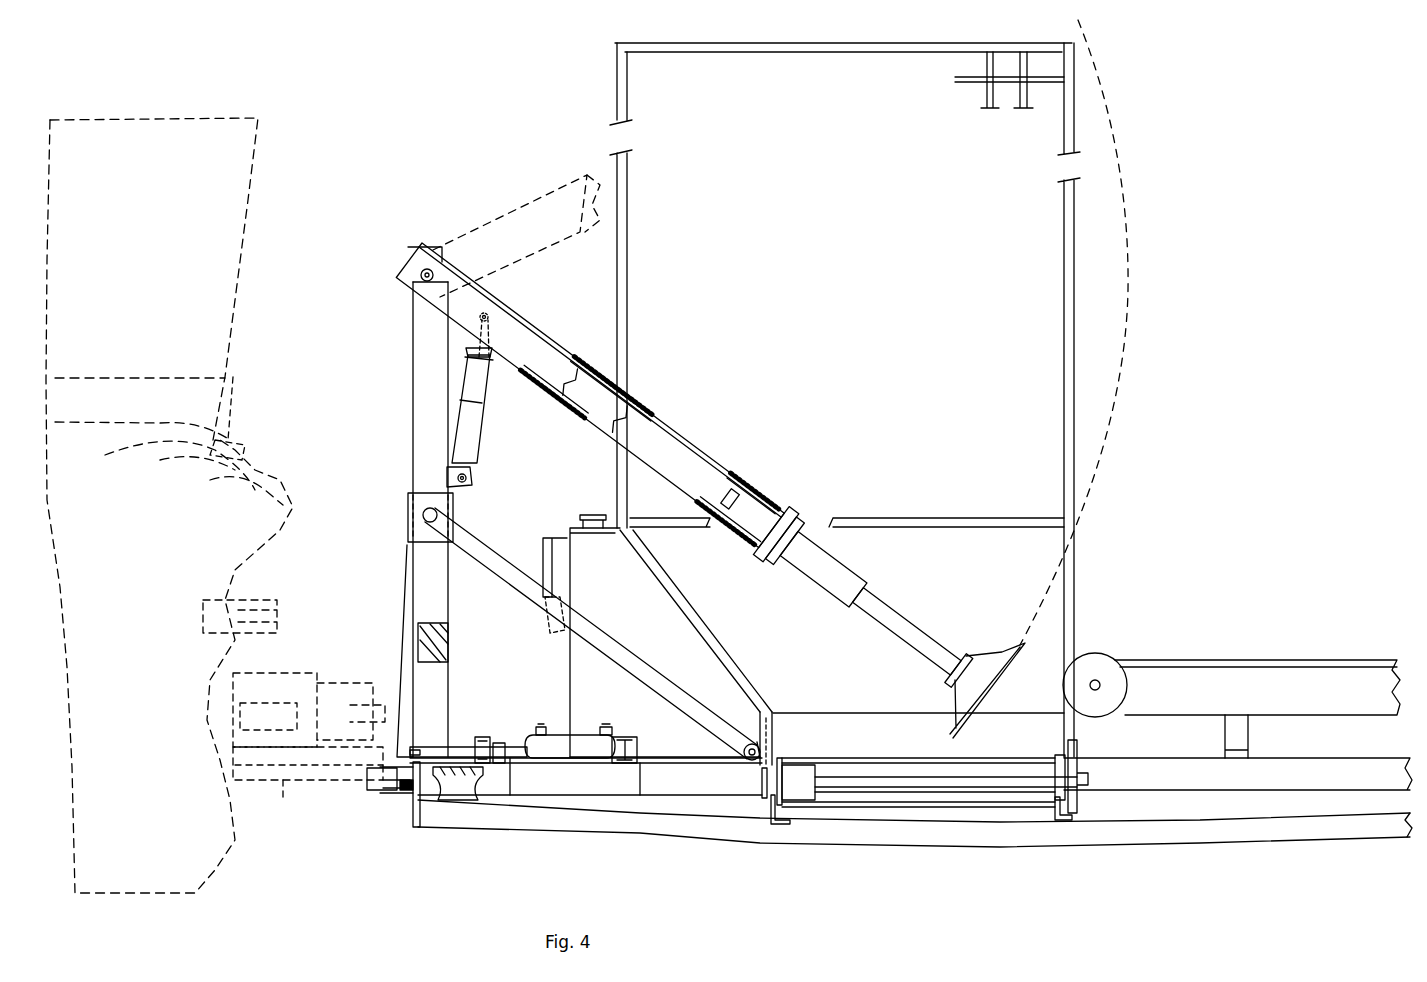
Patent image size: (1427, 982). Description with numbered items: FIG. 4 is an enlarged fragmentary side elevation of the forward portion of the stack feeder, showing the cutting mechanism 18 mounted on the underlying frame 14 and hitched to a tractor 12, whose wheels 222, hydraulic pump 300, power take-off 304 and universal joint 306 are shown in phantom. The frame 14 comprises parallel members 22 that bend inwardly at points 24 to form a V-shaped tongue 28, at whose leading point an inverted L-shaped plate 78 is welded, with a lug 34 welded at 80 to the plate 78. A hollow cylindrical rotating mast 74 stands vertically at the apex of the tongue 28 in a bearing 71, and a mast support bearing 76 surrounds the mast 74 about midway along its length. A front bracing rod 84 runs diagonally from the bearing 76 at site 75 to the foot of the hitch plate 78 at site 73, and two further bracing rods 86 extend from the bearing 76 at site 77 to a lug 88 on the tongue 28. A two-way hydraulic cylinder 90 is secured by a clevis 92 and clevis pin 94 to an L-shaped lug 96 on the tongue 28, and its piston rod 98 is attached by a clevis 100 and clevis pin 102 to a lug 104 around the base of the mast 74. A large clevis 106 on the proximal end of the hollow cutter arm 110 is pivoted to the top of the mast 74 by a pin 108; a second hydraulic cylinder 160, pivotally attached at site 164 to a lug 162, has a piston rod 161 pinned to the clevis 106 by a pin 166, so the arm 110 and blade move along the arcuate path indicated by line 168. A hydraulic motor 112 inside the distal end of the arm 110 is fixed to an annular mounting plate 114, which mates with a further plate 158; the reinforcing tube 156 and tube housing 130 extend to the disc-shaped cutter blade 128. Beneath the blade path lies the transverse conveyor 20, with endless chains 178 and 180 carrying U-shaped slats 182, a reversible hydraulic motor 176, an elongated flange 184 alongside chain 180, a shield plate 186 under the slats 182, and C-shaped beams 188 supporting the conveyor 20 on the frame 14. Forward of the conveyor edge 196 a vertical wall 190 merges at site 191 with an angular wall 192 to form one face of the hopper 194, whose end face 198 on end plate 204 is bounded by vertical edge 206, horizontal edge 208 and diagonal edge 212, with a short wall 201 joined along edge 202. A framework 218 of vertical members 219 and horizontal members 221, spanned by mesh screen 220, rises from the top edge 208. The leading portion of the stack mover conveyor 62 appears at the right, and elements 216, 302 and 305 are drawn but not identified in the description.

The tractor 12 is at (258, 218).
The underlying frame 14 is at (920, 833).
The cutting mechanism 18 is at (405, 185).
The transverse conveyor 20 is at (858, 812).
The parallel members 22 is at (965, 830).
The points 24 is at (868, 818).
The V-shaped tongue 28 is at (580, 818).
The lug 34 is at (380, 785).
The conveyor 62 is at (1130, 692).
The bearing 71 is at (440, 805).
The site 73 is at (425, 747).
The rotating mast 74 is at (413, 405).
The site 75 is at (408, 520).
The mast support bearing 76 is at (455, 502).
The site 77 is at (408, 497).
The inverted L-shaped plate 78 is at (410, 820).
The weld site 80 is at (410, 800).
The front bracing rod 84 is at (405, 598).
The bracing rods 86 is at (592, 640).
The lug 88 is at (747, 722).
The two-way hydraulic cylinder 90 is at (568, 738).
The clevis 92 is at (640, 748).
The clevis pin 94 is at (608, 725).
The L-shaped lug 96 is at (643, 770).
The piston rod 98 is at (512, 760).
The clevis 100 is at (497, 745).
The clevis pin 102 is at (483, 737).
The lug 104 is at (455, 757).
The large clevis 106 is at (420, 318).
The pin 108 is at (418, 274).
The cutter arm 110 is at (533, 198).
The hydraulic motor 112 is at (765, 485).
The annular mounting plate 114 is at (790, 520).
The cutter blade 128 is at (990, 688).
The tube housing 130 is at (880, 592).
The reinforcing tube 156 is at (840, 562).
The annular mounting plate 158 is at (815, 496).
The second hydraulic cylinder 160 is at (472, 443).
The piston rod 161 is at (468, 350).
The lug 162 is at (457, 470).
The site 164 is at (470, 476).
The pin 166 is at (492, 310).
The line 168 is at (1133, 280).
The reversible hydraulic motor 176 is at (838, 770).
The endless chain 178 is at (800, 760).
The endless chain 180 is at (1075, 820).
The U-shaped slats 182 is at (905, 760).
The elongated flange 184 is at (1080, 755).
The rectangular plate 186 is at (965, 760).
The C-shaped beams 188 is at (1080, 803).
The vertical wall 190 is at (780, 740).
The site 191 is at (766, 718).
The angular wall 192 is at (703, 628).
The foliage hopper 194 is at (683, 578).
The forward edge 196 is at (748, 758).
The end face 198 is at (1008, 567).
The short wall 201 is at (1078, 615).
The longitudinal edge 202 is at (1083, 595).
The end plate 204 is at (1083, 540).
The straight vertical edge 206 is at (1048, 567).
The horizontal edge 208 is at (960, 523).
The diagonal edge 212 is at (665, 590).
The beam 216 is at (910, 735).
The metal framework 218 is at (1083, 118).
The vertical members 219 is at (627, 275).
The mesh screen 220 is at (960, 80).
The horizontal members 221 is at (815, 52).
The wheels 222 is at (250, 440).
The hydraulic pump 300 is at (320, 673).
The hitch bar 302 is at (283, 778).
The power take-off 304 is at (278, 640).
The hanger 305 is at (555, 640).
The universal joint 306 is at (292, 665).